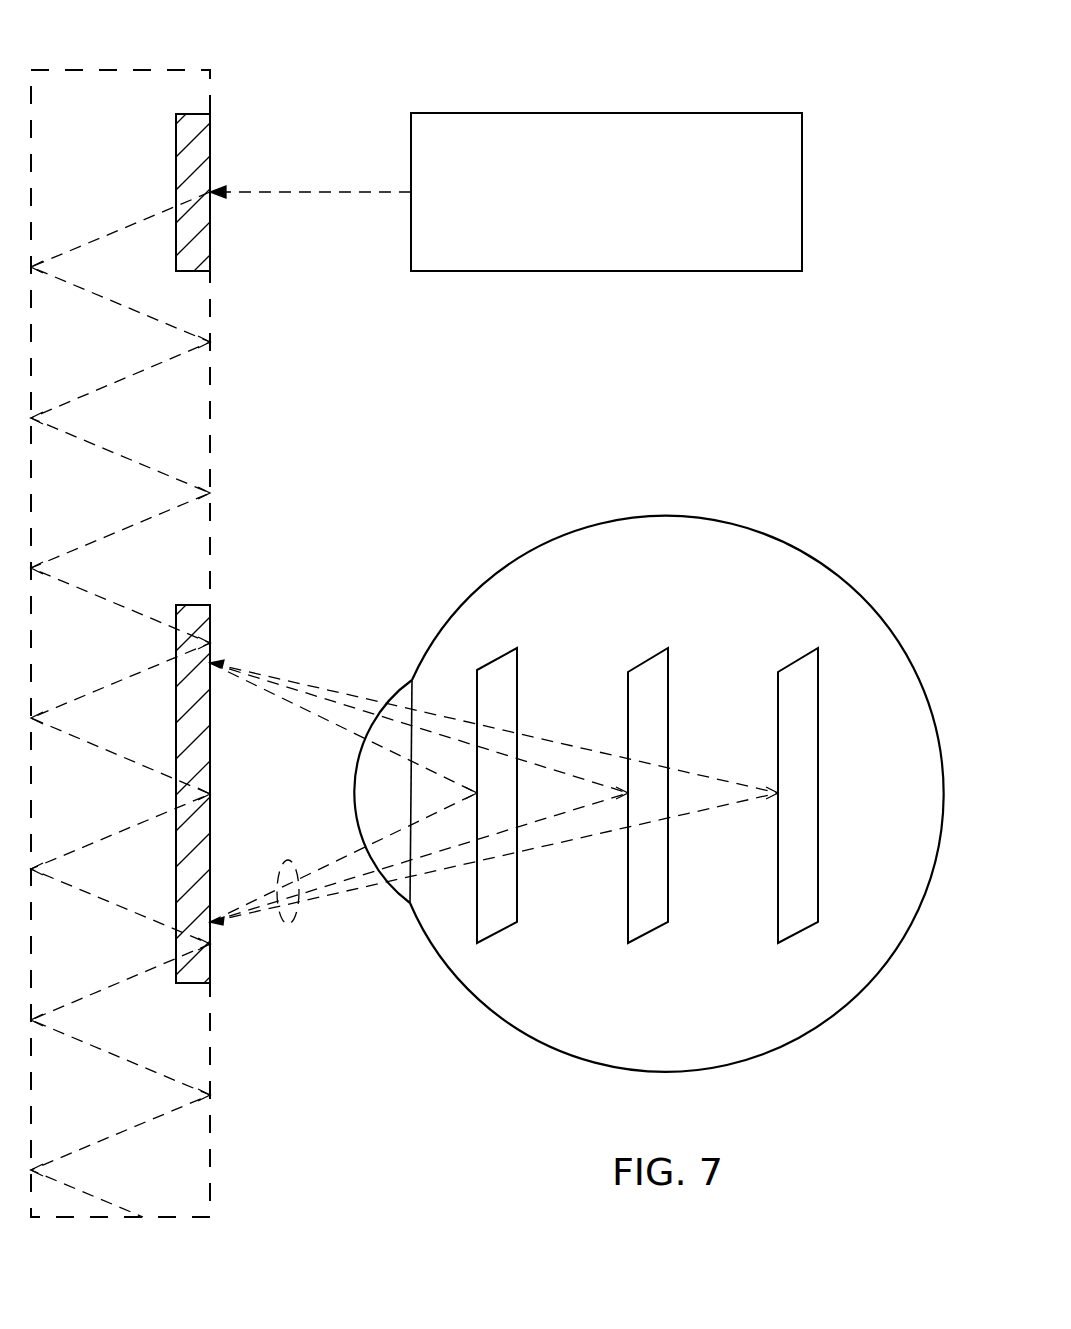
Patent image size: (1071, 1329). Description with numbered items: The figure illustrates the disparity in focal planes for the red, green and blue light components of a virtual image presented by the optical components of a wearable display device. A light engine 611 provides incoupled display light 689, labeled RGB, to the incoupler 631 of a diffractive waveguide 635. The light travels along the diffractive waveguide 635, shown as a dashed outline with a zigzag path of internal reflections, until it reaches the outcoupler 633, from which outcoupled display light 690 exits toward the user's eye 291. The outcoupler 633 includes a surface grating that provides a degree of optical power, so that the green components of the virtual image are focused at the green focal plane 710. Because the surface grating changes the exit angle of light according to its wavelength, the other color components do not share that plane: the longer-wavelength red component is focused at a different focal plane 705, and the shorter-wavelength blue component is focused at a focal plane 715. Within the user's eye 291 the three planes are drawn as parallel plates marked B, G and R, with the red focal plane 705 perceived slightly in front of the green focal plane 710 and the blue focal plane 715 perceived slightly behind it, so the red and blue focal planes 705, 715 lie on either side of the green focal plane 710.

The diffractive waveguide 635 is at (93, 66).
The incoupler 631 is at (176, 172).
The light engine 611 is at (604, 113).
The incoupled display light 689 is at (290, 195).
The outcoupler 633 is at (176, 872).
The outcoupled display light 690 is at (291, 924).
The user's eye 291 is at (745, 523).
The focal plane for blue light components 715 is at (495, 935).
The focal plane for green light components 710 is at (648, 935).
The focal plane for red light components 705 is at (798, 935).